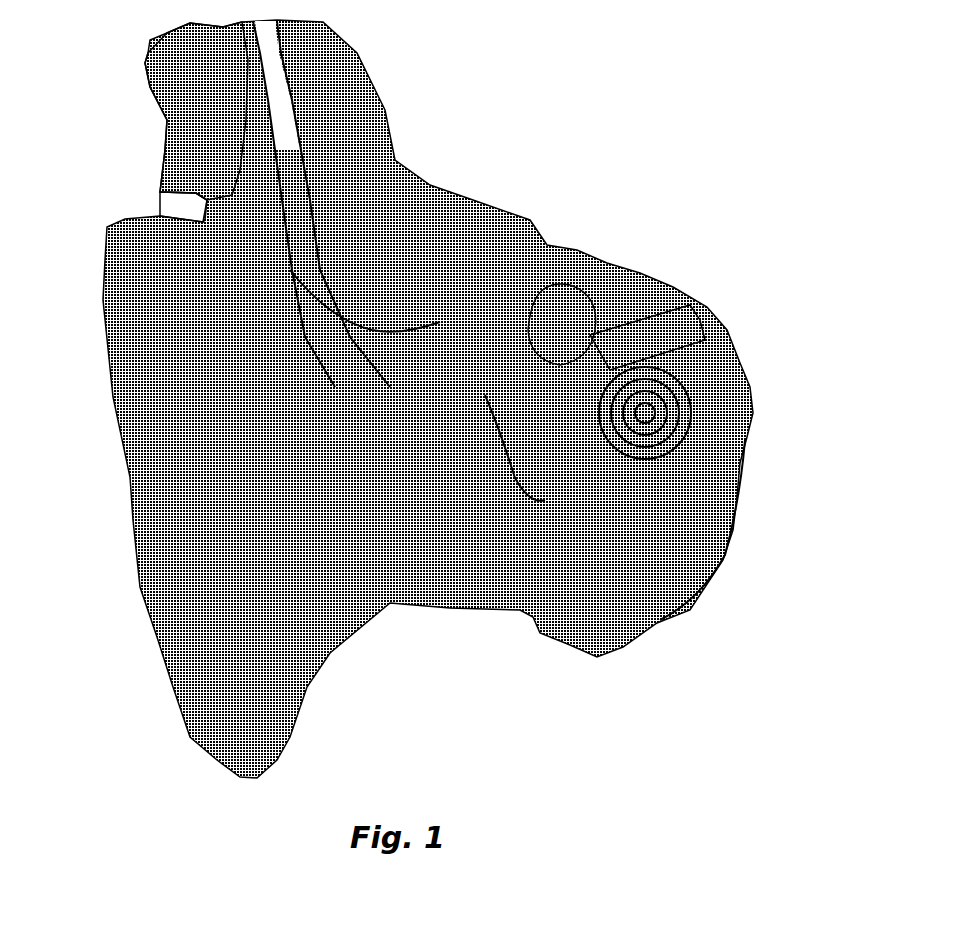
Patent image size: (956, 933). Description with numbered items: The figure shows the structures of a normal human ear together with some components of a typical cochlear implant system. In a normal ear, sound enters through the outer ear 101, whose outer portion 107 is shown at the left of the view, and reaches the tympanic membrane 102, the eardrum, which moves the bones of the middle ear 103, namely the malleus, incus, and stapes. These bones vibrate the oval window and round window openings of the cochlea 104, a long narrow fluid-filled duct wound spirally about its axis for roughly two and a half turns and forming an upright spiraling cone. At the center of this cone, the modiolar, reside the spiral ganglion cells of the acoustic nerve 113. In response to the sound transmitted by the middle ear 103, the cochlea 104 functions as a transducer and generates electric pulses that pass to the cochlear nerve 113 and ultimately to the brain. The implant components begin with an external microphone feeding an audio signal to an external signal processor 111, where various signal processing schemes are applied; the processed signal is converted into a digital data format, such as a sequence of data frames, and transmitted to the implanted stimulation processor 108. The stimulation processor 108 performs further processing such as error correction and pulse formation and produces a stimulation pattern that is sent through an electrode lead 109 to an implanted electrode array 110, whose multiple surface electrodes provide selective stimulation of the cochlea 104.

The outer ear 101 is at (157, 397).
The tympanic membrane 102 is at (515, 478).
The middle ear 103 is at (600, 290).
The cochlea 104 is at (648, 414).
The helix of the outer ear 107 is at (178, 121).
The stimulation processor 108 is at (262, 70).
The electrode lead 109 is at (372, 330).
The electrode array 110 is at (743, 483).
The external signal processor 111 is at (197, 214).
The acoustic nerve 113 is at (700, 320).